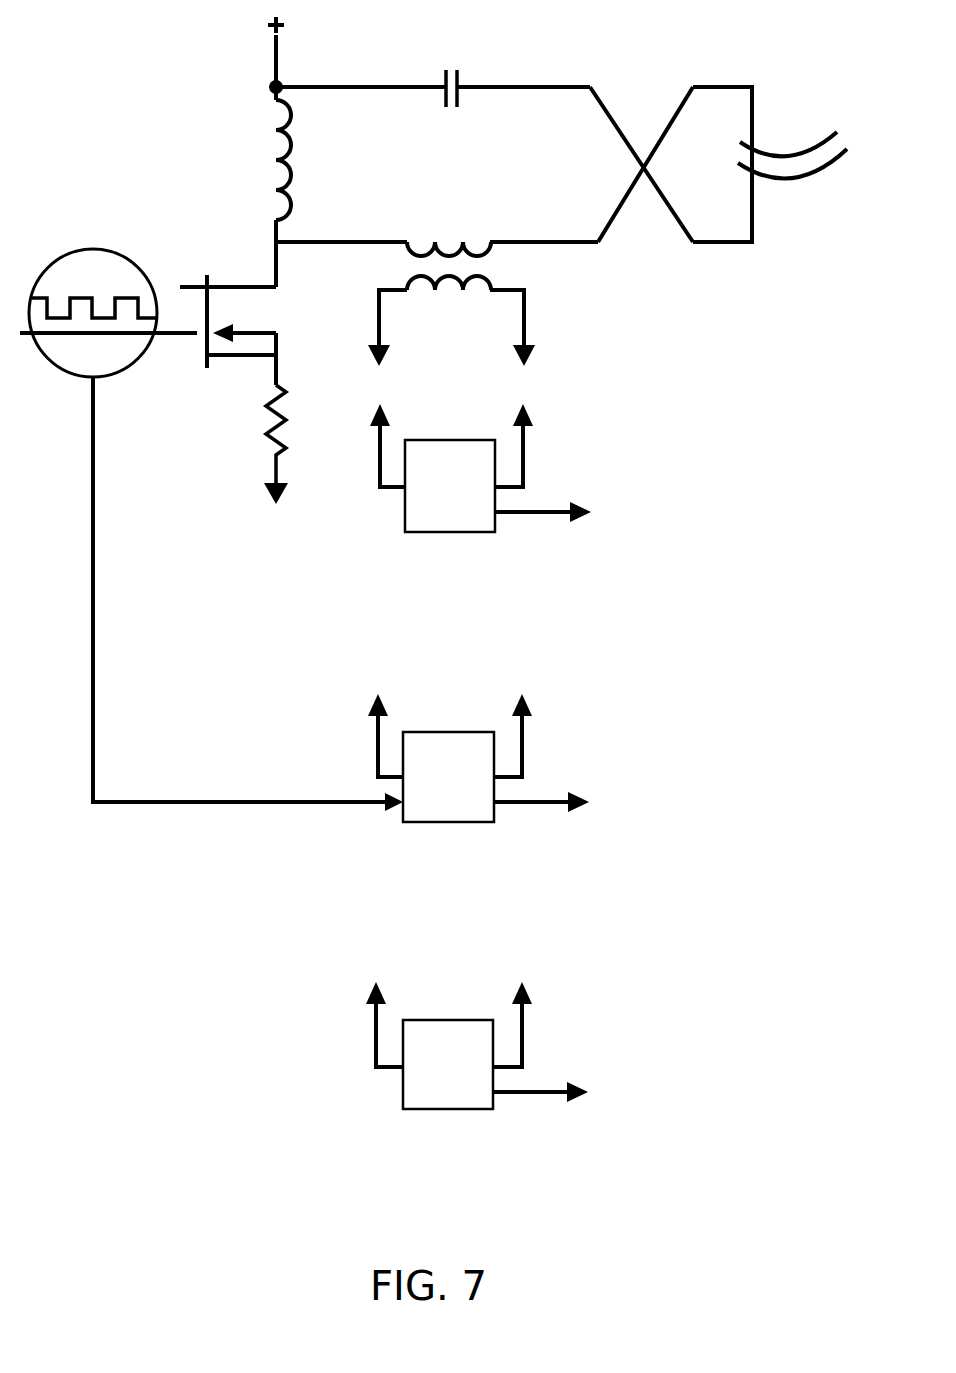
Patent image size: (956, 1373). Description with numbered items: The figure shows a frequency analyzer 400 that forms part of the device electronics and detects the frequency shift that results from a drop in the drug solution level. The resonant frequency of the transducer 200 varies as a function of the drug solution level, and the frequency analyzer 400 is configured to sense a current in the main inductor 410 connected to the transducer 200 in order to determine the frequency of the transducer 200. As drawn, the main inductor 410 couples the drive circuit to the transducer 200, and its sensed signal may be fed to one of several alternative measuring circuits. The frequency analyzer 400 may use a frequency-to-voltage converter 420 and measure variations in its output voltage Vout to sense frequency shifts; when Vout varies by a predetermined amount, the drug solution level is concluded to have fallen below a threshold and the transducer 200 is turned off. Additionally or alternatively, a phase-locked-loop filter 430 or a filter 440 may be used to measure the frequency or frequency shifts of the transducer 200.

The frequency analyzer 400 is at (126, 67).
The transducer 200 is at (797, 178).
The main inductor 410 is at (437, 240).
The frequency-to-voltage converter 420 is at (462, 532).
The phase-locked-loop filter 430 is at (460, 822).
The filter 440 is at (460, 1109).